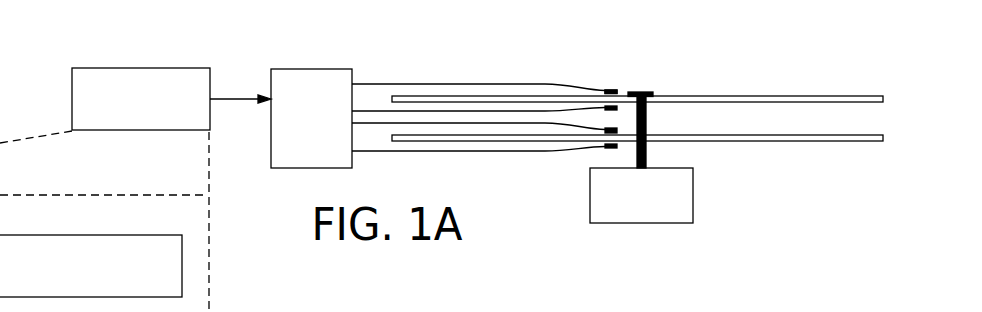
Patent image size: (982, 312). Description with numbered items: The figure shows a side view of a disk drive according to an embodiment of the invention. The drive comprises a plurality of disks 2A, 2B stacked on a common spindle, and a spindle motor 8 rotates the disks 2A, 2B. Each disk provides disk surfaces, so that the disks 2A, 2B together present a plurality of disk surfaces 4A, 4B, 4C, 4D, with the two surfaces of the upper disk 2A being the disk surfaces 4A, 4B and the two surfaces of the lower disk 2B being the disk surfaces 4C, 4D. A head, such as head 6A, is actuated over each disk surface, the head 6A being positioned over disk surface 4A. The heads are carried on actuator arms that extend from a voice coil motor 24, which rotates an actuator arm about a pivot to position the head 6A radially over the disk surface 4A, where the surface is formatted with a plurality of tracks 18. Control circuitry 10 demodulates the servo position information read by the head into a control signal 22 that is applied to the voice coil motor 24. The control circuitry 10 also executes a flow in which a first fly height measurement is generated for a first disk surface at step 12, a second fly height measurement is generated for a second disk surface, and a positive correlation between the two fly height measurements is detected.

The disk 2A is at (883, 99).
The disk 2B is at (883, 138).
The disk surface 4A is at (803, 95).
The disk surface 4B is at (812, 102).
The disk surface 4C is at (793, 134).
The disk surface 4D is at (841, 142).
The head 6A is at (607, 90).
The spindle motor 8 is at (694, 193).
The control circuitry 10 is at (143, 67).
The control signal 22 is at (222, 98).
The voice coil motor 24 is at (305, 69).
The tracks 18 is at (795, 152).
The step of generating a first fly height measurement 12 is at (113, 297).